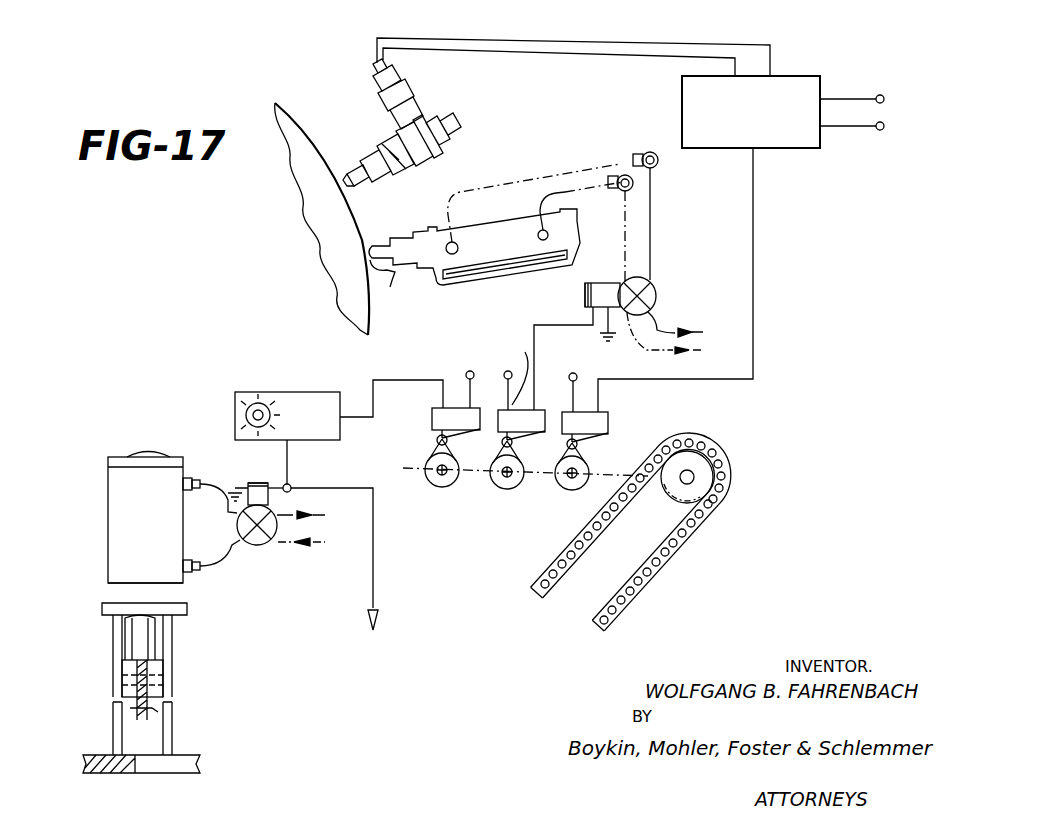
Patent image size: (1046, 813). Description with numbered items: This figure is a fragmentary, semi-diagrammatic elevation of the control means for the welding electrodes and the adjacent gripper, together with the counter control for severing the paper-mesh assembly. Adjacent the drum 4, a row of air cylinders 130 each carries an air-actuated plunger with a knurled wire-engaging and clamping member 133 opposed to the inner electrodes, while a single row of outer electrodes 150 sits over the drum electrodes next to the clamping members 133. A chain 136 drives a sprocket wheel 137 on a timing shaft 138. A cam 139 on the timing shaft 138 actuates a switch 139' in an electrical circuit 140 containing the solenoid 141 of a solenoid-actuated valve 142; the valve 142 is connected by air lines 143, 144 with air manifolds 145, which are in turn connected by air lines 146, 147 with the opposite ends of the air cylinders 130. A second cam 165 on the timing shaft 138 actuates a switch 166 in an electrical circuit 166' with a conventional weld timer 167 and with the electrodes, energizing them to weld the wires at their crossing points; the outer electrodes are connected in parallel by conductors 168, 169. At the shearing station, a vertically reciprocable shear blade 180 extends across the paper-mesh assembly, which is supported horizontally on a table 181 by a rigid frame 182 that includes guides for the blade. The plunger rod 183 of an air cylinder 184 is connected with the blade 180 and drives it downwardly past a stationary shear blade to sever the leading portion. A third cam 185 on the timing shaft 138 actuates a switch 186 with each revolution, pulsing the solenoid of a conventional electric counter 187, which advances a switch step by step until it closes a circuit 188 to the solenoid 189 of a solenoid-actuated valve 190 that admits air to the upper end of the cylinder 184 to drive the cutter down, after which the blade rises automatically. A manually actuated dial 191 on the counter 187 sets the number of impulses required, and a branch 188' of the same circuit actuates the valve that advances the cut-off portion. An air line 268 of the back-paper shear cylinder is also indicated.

The drum 4 is at (364, 220).
The air cylinder 130 is at (517, 202).
The wire-engaging and clamping member 133 is at (399, 286).
The chain 136 is at (650, 555).
The sprocket wheel 137 is at (697, 495).
The timing shaft 138 is at (694, 475).
The cam 139 is at (513, 448).
The switch 139' is at (511, 368).
The electrical circuit 140 is at (560, 305).
The solenoid 141 is at (612, 270).
The solenoid-actuated valve 142 is at (656, 290).
The air line 143 is at (628, 248).
The air line 144 is at (652, 221).
The air manifold 145 is at (622, 174).
The air line 146 is at (586, 186).
The air line 147 is at (554, 172).
The outer electrode 150 is at (357, 155).
The cam 165 is at (586, 465).
The switch 166 is at (615, 403).
The electrical circuit 166' is at (703, 280).
The weld timer 167 is at (814, 66).
The conductor 168 is at (648, 22).
The conductor 169 is at (583, 56).
The shear blade 180 is at (150, 713).
The table 181 is at (100, 755).
The rigid frame 182 is at (115, 653).
The plunger rod 183 is at (140, 640).
The air cylinder 184 is at (112, 495).
The cam 185 is at (432, 478).
The switch 186 is at (440, 421).
The electric counter 187 is at (350, 372).
The circuit 188 is at (309, 535).
The branch circuit 188' is at (402, 573).
The solenoid 189 is at (268, 504).
The solenoid-actuated valve 190 is at (255, 547).
The manually actuated dial 191 is at (246, 409).
The air line 268 is at (838, 8).